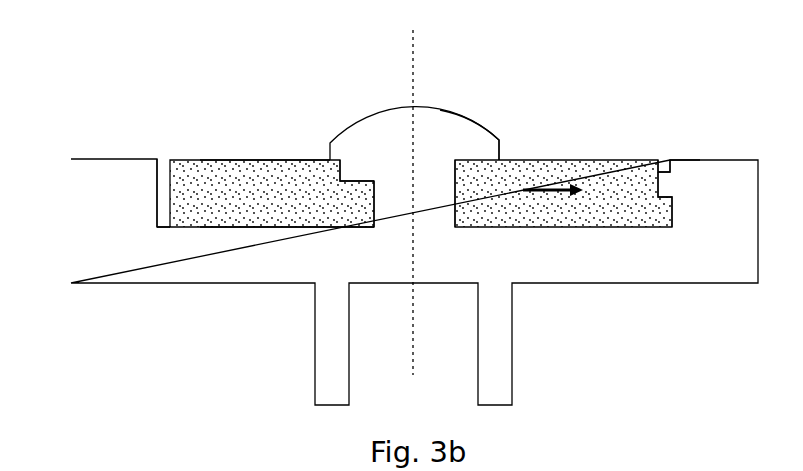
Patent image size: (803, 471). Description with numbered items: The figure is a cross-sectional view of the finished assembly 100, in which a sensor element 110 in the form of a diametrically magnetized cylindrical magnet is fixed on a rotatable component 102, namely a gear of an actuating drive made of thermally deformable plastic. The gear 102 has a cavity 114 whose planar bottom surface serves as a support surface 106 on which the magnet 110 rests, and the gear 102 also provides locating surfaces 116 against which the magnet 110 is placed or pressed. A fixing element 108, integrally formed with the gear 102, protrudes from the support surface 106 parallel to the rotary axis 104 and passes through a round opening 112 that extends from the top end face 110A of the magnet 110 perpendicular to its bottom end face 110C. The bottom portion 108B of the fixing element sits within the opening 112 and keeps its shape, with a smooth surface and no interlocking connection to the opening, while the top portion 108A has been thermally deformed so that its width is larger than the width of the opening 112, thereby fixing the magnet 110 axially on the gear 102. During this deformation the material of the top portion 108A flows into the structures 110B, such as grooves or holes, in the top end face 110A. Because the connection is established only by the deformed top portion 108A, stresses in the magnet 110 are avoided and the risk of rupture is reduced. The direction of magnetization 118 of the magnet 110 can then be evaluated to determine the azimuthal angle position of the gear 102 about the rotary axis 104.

The assembly 100 is at (134, 58).
The rotatable component 102 is at (653, 272).
The rotary axis 104 is at (418, 76).
The support surface 106 is at (283, 228).
The fixing element 108 is at (466, 95).
The top portion of the fixing element 108A is at (497, 138).
The bottom portion of the fixing element 108B is at (424, 186).
The sensor element 110 is at (243, 178).
The top end face 110A is at (298, 158).
The structures 110B is at (346, 178).
The bottom end face 110C is at (255, 227).
The opening 112 is at (453, 232).
The cavity 114 is at (673, 160).
The locating surfaces 116 is at (660, 177).
The direction of magnetization 118 is at (570, 181).